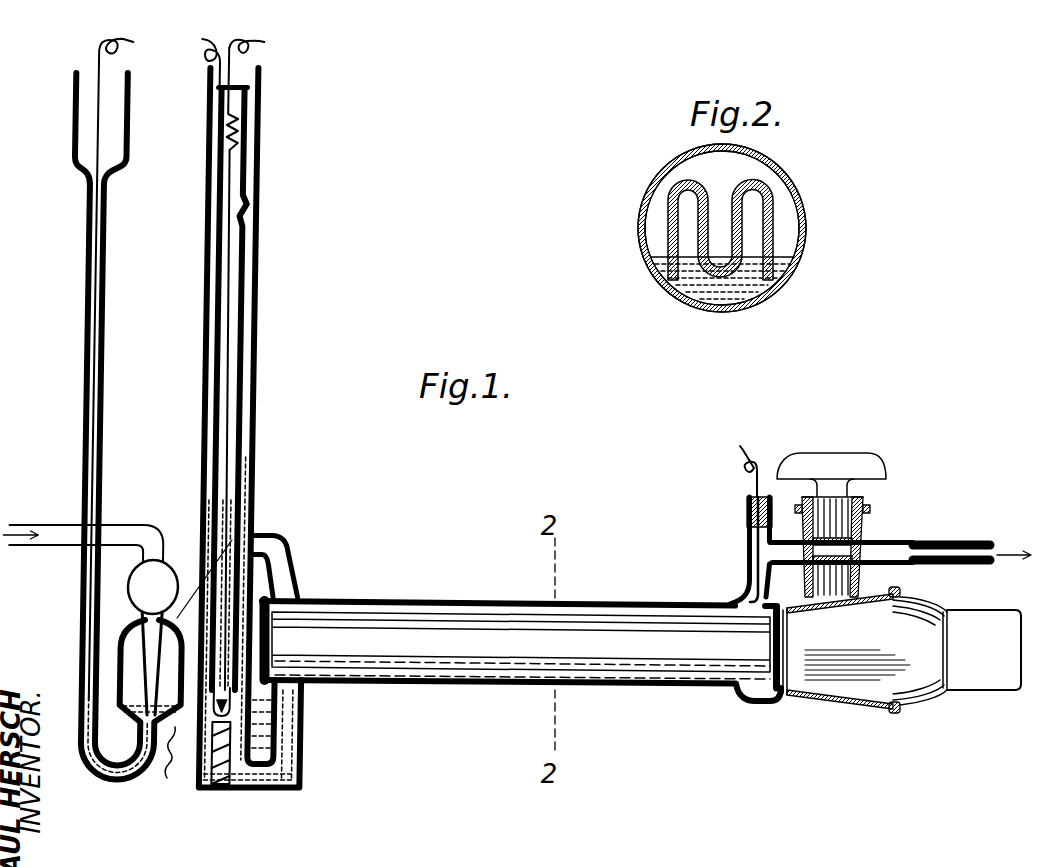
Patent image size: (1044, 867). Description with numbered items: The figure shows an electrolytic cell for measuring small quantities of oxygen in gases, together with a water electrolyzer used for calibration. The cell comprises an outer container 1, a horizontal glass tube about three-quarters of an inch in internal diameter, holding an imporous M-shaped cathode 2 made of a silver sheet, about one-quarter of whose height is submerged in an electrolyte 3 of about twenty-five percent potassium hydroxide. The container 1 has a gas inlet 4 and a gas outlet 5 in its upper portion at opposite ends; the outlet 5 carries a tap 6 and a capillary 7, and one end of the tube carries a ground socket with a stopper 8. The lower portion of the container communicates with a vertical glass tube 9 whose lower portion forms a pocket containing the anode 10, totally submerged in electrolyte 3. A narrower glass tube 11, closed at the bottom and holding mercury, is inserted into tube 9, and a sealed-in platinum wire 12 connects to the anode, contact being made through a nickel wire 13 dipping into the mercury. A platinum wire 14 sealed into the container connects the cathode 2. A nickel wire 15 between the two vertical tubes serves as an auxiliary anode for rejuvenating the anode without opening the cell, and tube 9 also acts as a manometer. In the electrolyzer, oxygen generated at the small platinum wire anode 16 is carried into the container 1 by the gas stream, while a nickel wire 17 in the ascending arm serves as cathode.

In FIG. 1, the outer container 1 is at (323, 598).
In FIG. 2, the outer container 1 is at (643, 193).
In FIG. 1, the M-shaped cathode 2 is at (388, 627).
In FIG. 2, the M-shaped cathode 2 is at (668, 219).
In FIG. 1, the electrolyte 3 is at (467, 670).
In FIG. 2, the electrolyte 3 is at (700, 263).
In FIG. 1, the gas inlet 4 is at (268, 533).
In FIG. 1, the gas outlet 5 is at (742, 565).
In FIG. 1, the tap 6 is at (838, 513).
In FIG. 1, the capillary 7 is at (957, 542).
In FIG. 1, the stopper 8 is at (875, 670).
In FIG. 1, the vertical glass tube 9 is at (261, 260).
In FIG. 1, the anode 10 is at (238, 740).
In FIG. 1, the narrower glass tube 11 is at (245, 193).
In FIG. 1, the platinum wire 12 is at (242, 712).
In FIG. 1, the nickel wire 13 is at (235, 100).
In FIG. 1, the platinum wire 14 is at (735, 458).
In FIG. 1, the nickel wire 15 is at (220, 110).
In FIG. 1, the platinum wire anode 16 is at (149, 767).
In FIG. 1, the nickel wire 17 is at (98, 102).